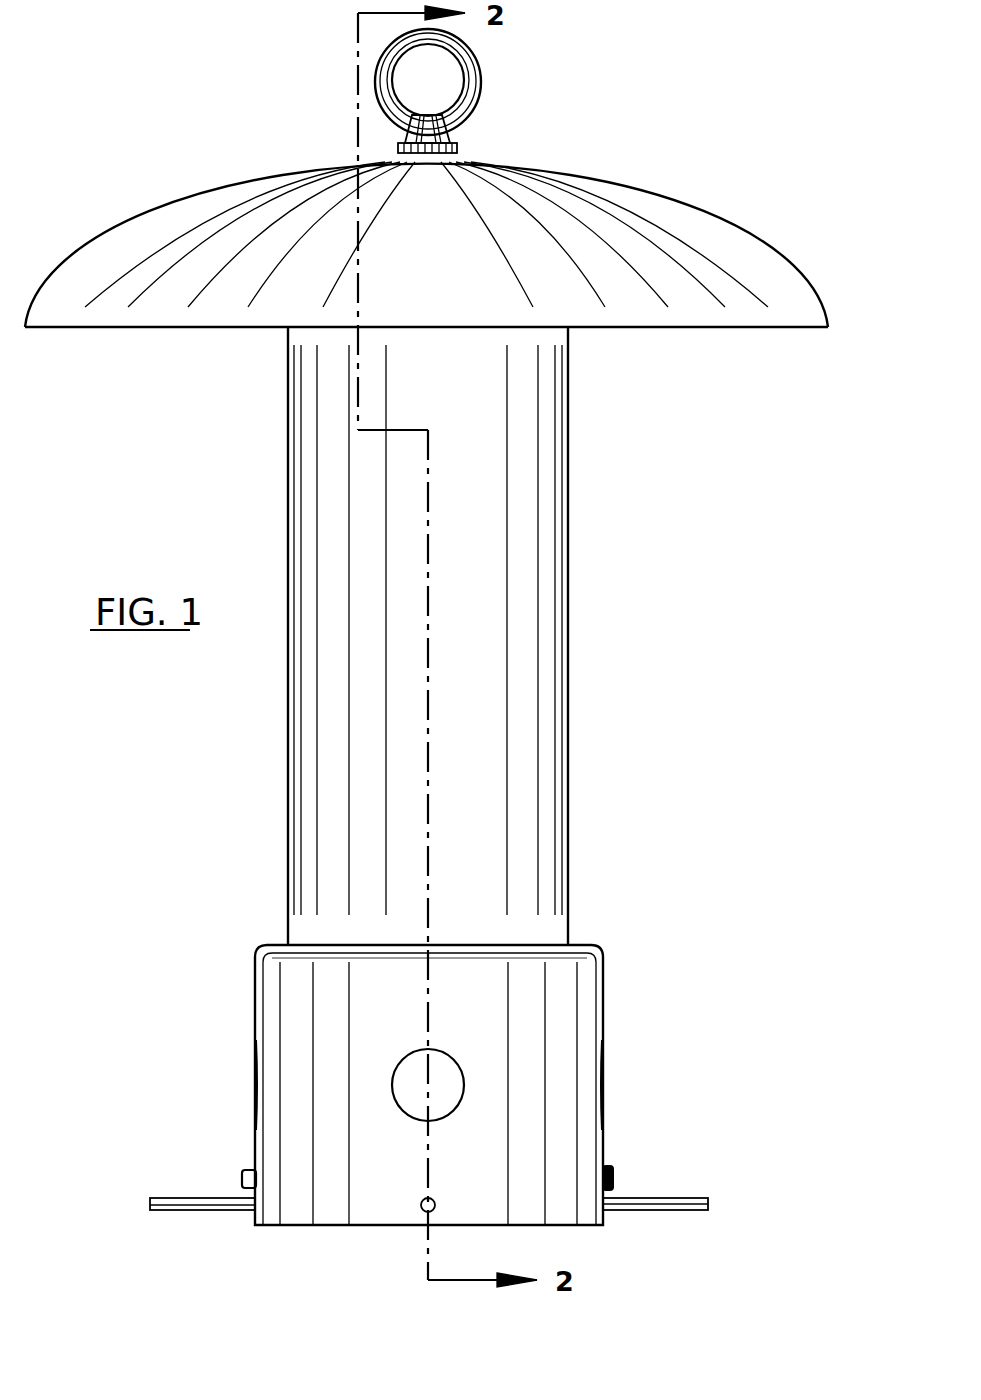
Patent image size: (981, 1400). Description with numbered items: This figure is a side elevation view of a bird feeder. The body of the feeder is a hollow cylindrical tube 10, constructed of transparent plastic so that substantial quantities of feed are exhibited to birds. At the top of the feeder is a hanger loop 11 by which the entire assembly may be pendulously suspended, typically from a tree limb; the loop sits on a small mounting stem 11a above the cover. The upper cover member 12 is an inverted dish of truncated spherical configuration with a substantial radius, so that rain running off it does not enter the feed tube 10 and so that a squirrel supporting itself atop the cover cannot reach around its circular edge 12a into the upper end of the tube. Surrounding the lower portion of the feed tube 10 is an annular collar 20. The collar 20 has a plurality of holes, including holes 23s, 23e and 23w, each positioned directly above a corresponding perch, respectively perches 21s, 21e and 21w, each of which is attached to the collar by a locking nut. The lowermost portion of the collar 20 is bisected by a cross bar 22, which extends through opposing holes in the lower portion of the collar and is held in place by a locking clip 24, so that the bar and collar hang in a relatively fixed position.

The hollow cylindrical tube 10 is at (575, 673).
The top hanger loop 11 is at (486, 76).
The ring mounting stem 11a is at (458, 152).
The upper cover member 12 is at (618, 177).
The circular edge 12a is at (832, 330).
The annular collar 20 is at (243, 998).
The west perch 21w is at (210, 1222).
The east perch 21e is at (712, 1216).
The south perch 21s is at (416, 1216).
The cross bar 22 is at (617, 1158).
The locking clip 24 is at (246, 1152).
The south hole 23s is at (462, 1055).
The west hole 23w is at (252, 1085).
The east hole 23e is at (606, 1086).